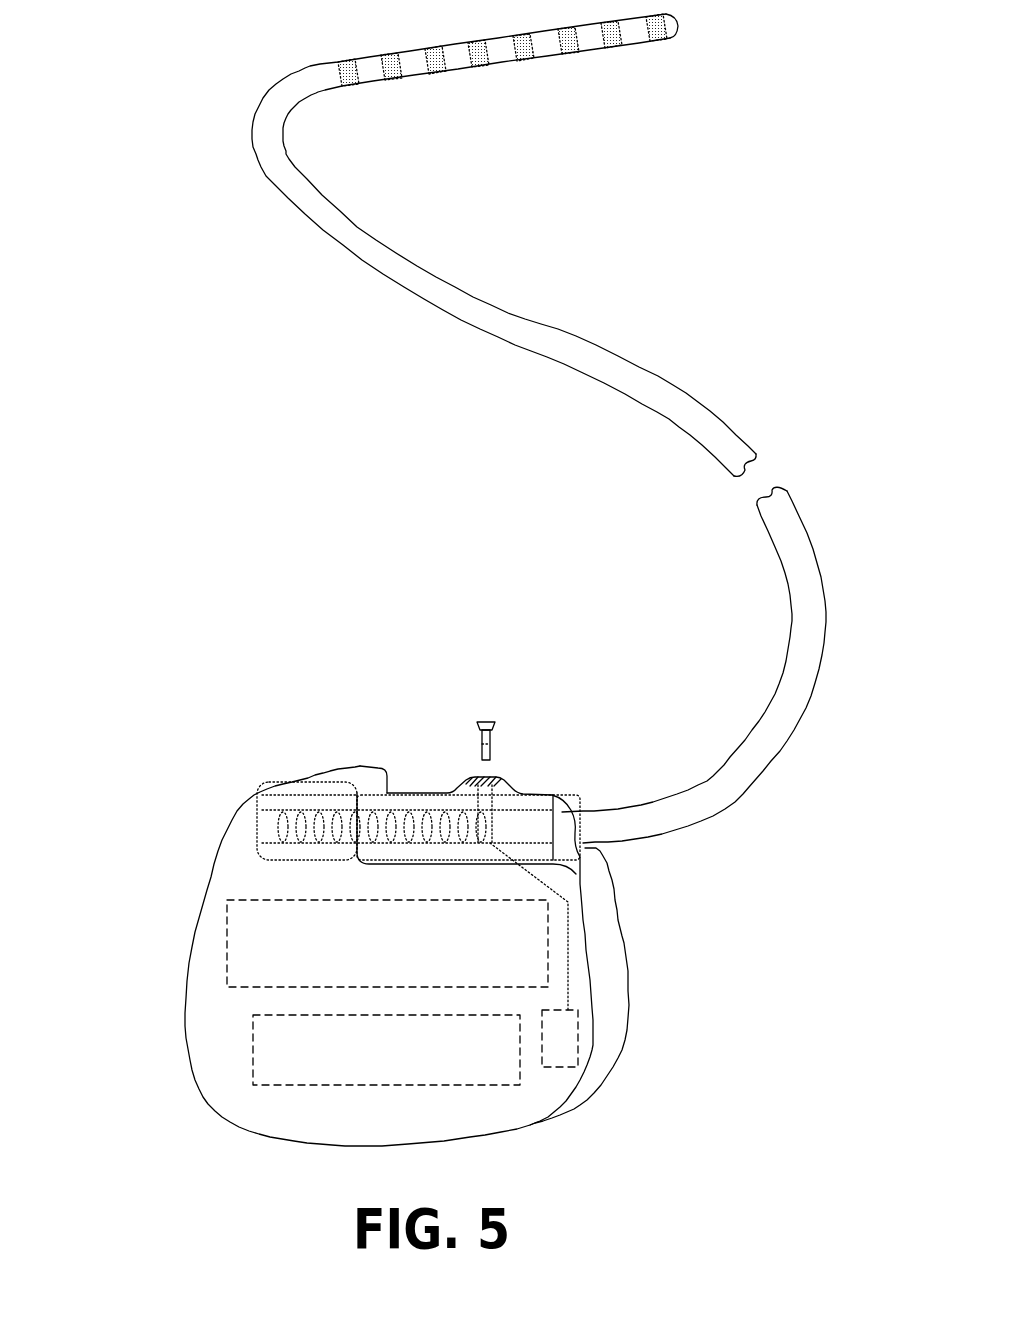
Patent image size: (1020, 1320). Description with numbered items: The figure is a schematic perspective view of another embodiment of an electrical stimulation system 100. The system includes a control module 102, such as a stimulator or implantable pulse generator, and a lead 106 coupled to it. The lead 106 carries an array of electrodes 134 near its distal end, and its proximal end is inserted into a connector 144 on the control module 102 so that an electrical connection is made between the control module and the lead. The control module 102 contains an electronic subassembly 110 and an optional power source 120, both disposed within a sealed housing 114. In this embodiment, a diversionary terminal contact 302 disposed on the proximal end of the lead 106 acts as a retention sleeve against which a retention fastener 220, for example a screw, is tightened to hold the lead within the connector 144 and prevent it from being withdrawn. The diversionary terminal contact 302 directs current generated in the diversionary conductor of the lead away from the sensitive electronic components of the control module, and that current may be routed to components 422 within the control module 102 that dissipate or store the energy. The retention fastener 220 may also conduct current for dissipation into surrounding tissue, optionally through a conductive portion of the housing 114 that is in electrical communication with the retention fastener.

The electrical stimulation system 100 is at (706, 314).
The control module 102 is at (232, 760).
The lead 106 is at (567, 333).
The electronic subassembly 110 is at (240, 937).
The sealed housing 114 is at (243, 870).
The power source 120 is at (262, 1047).
The electrodes 134 is at (670, 47).
The connector 144 is at (427, 793).
The retention fastener 220 is at (497, 725).
The diversionary terminal contact 302 is at (490, 812).
The components 422 is at (578, 1032).